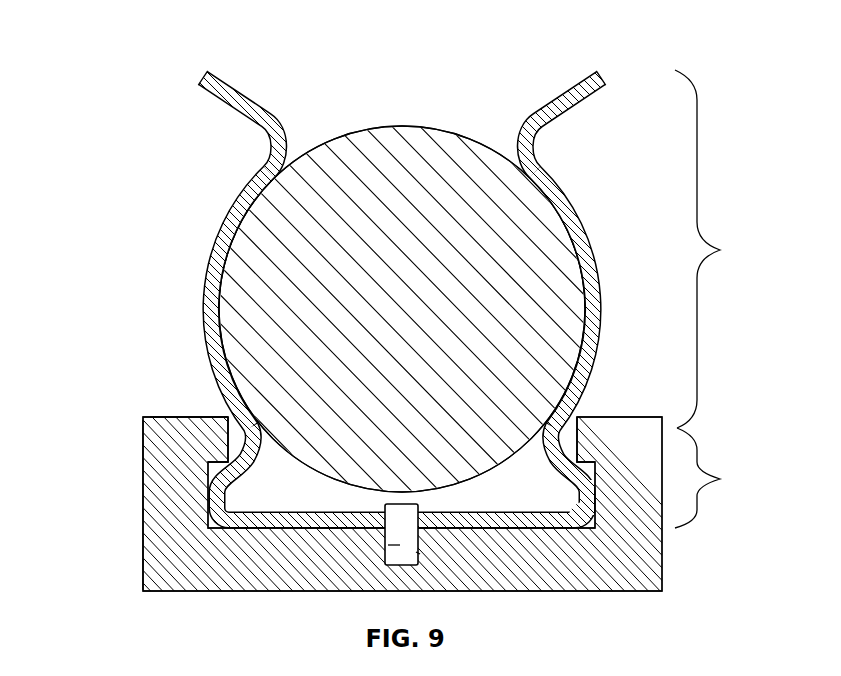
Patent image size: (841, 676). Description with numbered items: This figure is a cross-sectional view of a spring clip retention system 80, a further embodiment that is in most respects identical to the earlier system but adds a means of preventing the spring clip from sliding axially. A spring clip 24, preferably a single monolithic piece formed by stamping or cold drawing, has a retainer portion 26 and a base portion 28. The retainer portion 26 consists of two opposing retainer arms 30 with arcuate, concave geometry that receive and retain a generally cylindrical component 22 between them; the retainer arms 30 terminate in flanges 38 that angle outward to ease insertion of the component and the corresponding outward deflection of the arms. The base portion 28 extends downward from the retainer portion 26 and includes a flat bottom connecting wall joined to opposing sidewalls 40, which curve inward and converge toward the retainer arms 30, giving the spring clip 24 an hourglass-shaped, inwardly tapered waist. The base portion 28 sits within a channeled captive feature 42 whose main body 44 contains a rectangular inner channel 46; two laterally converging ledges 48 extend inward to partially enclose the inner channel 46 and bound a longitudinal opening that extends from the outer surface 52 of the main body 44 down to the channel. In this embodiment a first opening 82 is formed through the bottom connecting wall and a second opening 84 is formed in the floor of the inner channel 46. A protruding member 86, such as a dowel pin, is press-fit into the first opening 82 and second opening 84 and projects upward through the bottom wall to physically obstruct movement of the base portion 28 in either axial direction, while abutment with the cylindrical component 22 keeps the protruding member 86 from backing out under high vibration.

The spring clip retention system 80 is at (141, 97).
The generally cylindrical component 22 is at (389, 309).
The spring clip 24 is at (383, 293).
The retainer portion 26 is at (715, 249).
The base portion 28 is at (715, 478).
The retainer arms 30 is at (243, 203).
The flanges 38 is at (239, 98).
The sidewalls 40 is at (233, 476).
The captive feature 42 is at (142, 455).
The main body 44 is at (613, 582).
The inner channel 46 is at (508, 481).
The ledges 48 is at (213, 438).
The outer surface 52 is at (166, 416).
The first opening 82 is at (423, 519).
The second opening 84 is at (420, 554).
The protruding member 86 is at (398, 546).